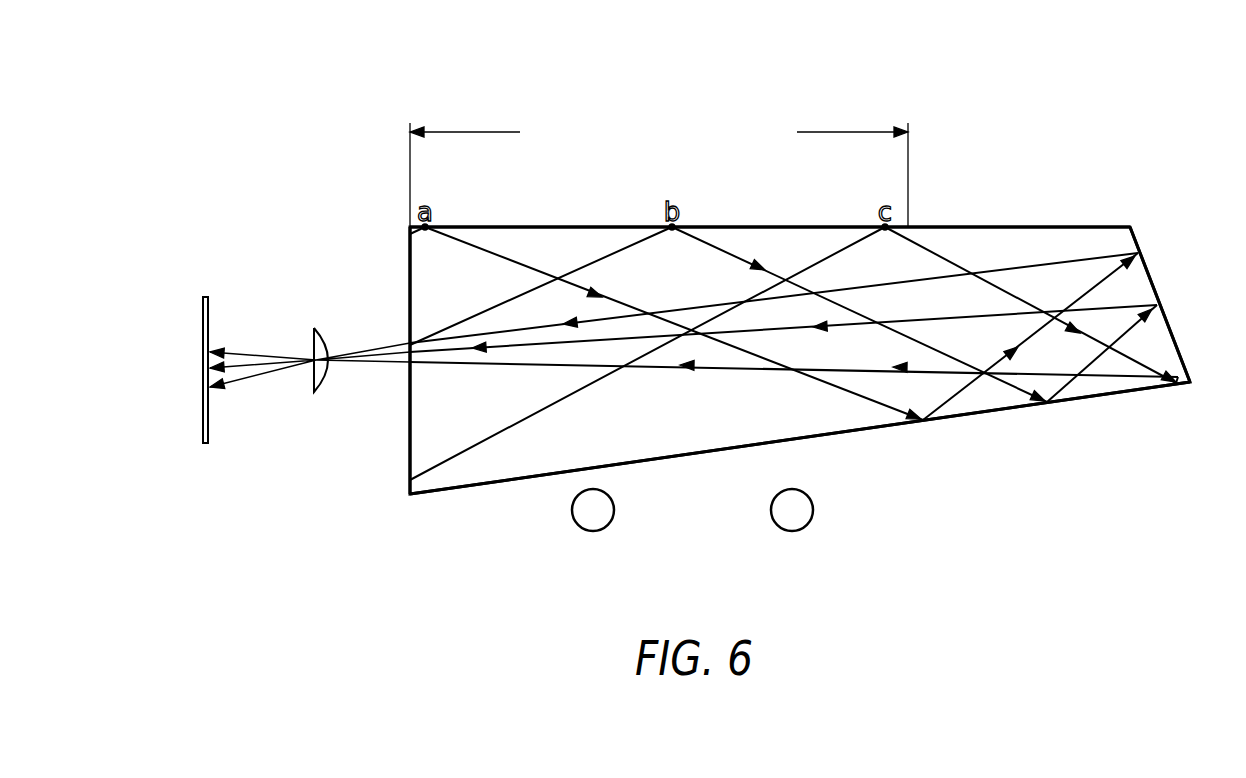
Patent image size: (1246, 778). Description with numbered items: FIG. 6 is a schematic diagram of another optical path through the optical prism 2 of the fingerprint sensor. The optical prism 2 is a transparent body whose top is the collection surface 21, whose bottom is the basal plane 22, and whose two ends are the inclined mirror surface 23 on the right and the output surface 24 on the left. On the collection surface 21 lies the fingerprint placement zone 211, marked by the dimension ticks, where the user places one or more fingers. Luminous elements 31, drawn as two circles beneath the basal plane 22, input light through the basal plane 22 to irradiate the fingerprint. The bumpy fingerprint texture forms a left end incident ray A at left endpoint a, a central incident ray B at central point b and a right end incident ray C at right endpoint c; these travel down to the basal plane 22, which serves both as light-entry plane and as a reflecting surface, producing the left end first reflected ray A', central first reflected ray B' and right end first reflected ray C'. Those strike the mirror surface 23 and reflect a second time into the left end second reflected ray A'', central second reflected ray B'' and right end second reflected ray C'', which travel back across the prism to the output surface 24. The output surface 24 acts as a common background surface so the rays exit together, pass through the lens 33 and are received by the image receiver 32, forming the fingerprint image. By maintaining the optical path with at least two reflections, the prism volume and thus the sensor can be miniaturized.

The optical prism 2 is at (1178, 238).
The collection surface 21 is at (588, 226).
The basal plane 22 is at (873, 430).
The mirror surface 23 is at (1160, 306).
The output surface 24 is at (409, 243).
The fingerprint placement zone 211 is at (659, 118).
The luminous element 31 is at (596, 525).
The image receiver 32 is at (203, 396).
The lens 33 is at (318, 395).
The left end incident ray A is at (674, 294).
The left end first reflected ray A' is at (1030, 368).
The left end second reflected ray A'' is at (774, 257).
The central incident ray B is at (859, 285).
The central first reflected ray B' is at (1102, 381).
The central second reflected ray B'' is at (783, 265).
The right end incident ray C is at (1030, 276).
The right end first reflected ray C' is at (1182, 417).
The right end second reflected ray C'' is at (794, 434).